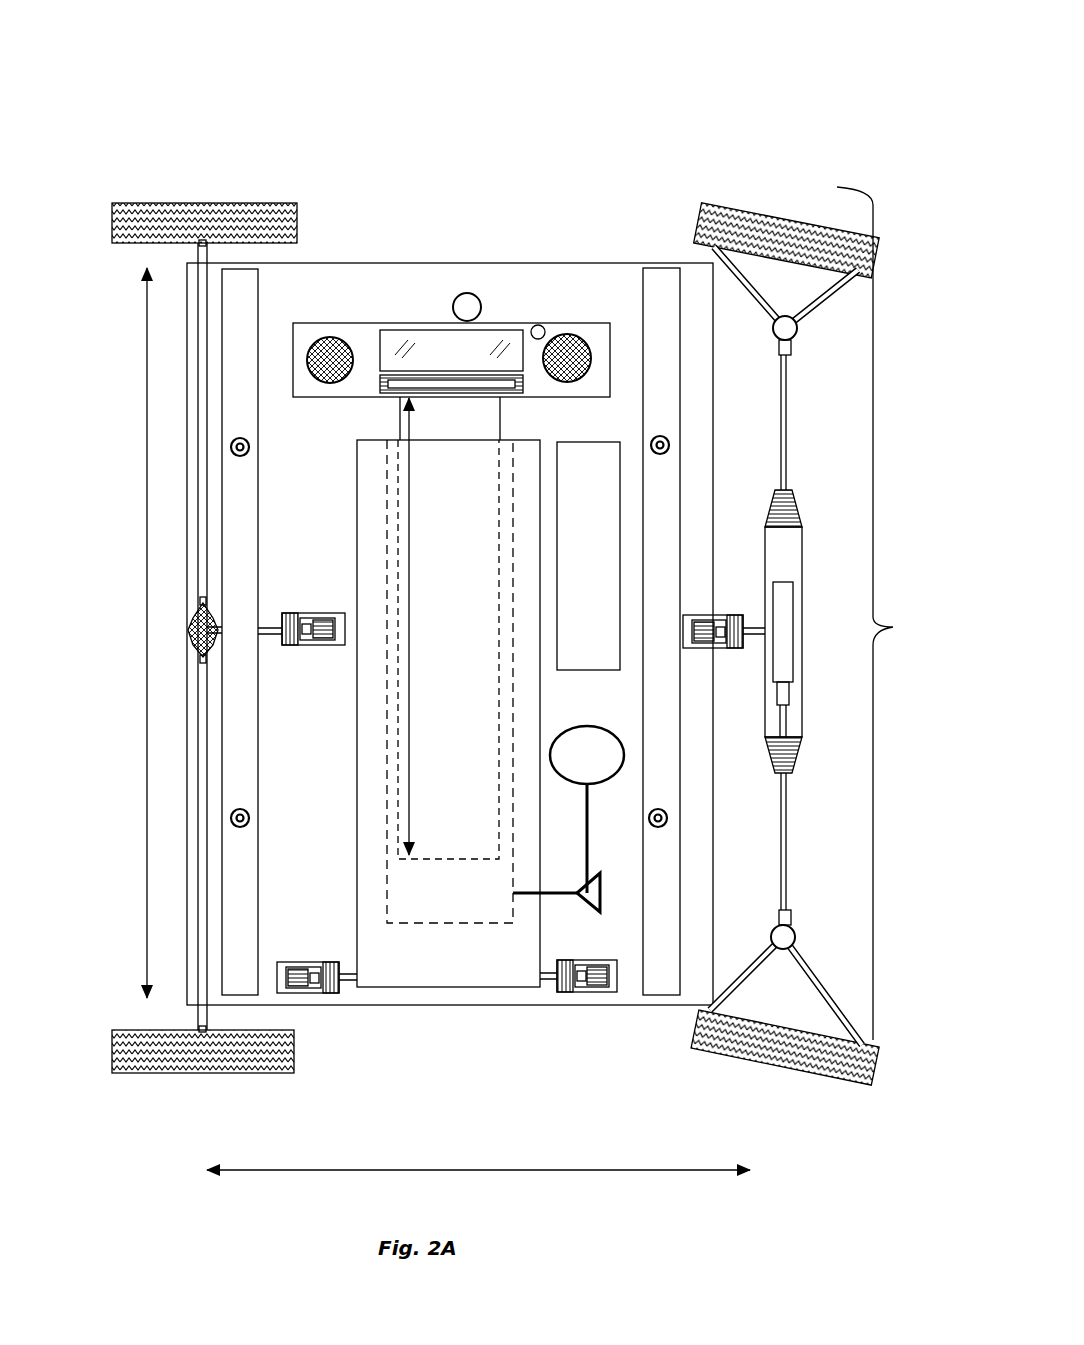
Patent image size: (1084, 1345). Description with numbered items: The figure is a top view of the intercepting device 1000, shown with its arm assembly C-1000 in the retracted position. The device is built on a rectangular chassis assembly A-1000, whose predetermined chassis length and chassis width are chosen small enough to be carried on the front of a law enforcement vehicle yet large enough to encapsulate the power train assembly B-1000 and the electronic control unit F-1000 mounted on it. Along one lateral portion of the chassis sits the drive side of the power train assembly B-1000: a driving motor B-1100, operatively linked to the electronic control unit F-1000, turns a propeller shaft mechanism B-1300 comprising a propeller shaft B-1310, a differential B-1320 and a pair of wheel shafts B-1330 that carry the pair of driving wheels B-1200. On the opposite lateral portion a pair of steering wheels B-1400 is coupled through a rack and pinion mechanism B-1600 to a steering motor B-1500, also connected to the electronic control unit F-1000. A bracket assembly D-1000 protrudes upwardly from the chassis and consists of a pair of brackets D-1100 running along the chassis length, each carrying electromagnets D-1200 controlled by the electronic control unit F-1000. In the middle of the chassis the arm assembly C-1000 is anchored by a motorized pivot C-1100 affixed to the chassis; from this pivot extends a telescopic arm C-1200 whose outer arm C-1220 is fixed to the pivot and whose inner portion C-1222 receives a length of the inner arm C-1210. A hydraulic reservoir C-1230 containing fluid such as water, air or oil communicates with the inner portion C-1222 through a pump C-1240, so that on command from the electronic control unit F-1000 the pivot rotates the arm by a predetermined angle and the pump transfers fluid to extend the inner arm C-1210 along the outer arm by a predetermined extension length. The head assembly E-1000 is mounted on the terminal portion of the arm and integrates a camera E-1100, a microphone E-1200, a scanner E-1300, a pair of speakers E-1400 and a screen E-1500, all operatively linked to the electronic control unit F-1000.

The intercepting device 1000 is at (762, 118).
The chassis assembly A-1000 is at (555, 1058).
The power train assembly B-1000 is at (821, 690).
The driving motor B-1100 is at (308, 613).
The pair of driving wheels B-1200 is at (203, 203).
The propeller shaft mechanism B-1300 is at (203, 604).
The propeller shaft B-1310 is at (260, 636).
The differential B-1320 is at (212, 638).
The pair of wheel shafts B-1330 is at (202, 708).
The pair of steering wheels B-1400 is at (843, 1090).
The steering motor B-1500 is at (742, 631).
The rack and pinion mechanism B-1600 is at (813, 523).
The arm assembly C-1000 is at (501, 702).
The motorized pivot C-1100 is at (322, 942).
The telescopic arm C-1200 is at (335, 888).
The inner arm C-1210 is at (449, 628).
The outer arm C-1220 is at (448, 713).
The inner portion C-1222 is at (451, 893).
The hydraulic reservoir C-1230 is at (624, 757).
The pump C-1240 is at (600, 893).
The bracket assembly D-1000 is at (215, 293).
The pair of brackets D-1100 is at (653, 993).
The pair of electromagnets D-1200 is at (663, 437).
The head assembly E-1000 is at (468, 210).
The camera E-1100 is at (465, 293).
The microphone E-1200 is at (534, 325).
The scanner E-1300 is at (420, 375).
The pair of speakers E-1400 is at (340, 338).
The screen E-1500 is at (390, 330).
The electronic control unit F-1000 is at (588, 556).